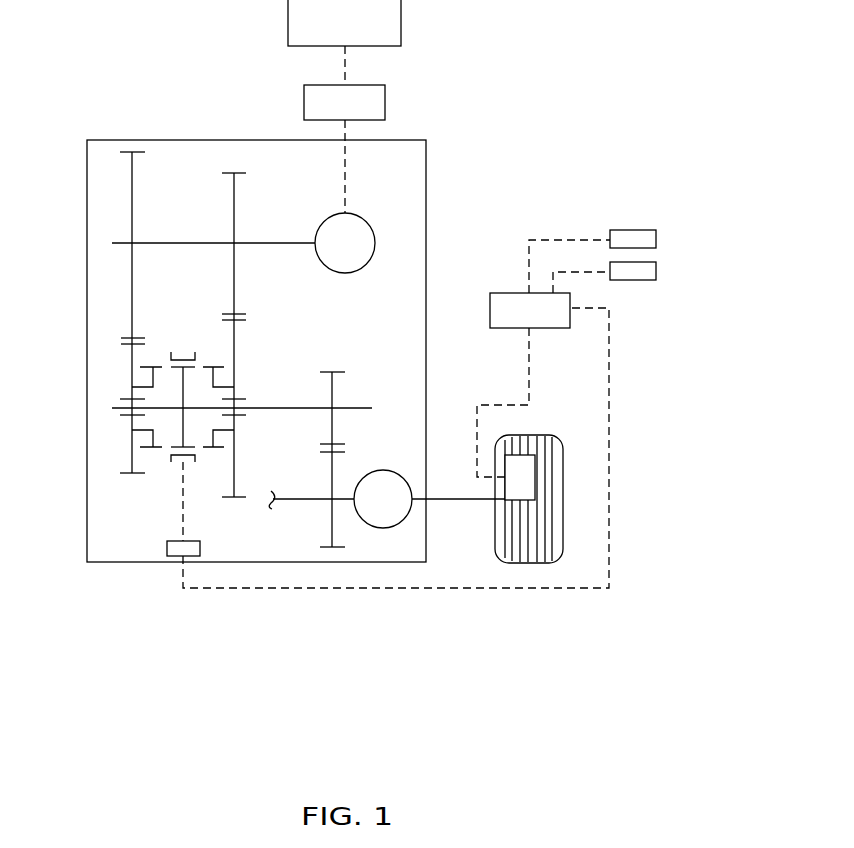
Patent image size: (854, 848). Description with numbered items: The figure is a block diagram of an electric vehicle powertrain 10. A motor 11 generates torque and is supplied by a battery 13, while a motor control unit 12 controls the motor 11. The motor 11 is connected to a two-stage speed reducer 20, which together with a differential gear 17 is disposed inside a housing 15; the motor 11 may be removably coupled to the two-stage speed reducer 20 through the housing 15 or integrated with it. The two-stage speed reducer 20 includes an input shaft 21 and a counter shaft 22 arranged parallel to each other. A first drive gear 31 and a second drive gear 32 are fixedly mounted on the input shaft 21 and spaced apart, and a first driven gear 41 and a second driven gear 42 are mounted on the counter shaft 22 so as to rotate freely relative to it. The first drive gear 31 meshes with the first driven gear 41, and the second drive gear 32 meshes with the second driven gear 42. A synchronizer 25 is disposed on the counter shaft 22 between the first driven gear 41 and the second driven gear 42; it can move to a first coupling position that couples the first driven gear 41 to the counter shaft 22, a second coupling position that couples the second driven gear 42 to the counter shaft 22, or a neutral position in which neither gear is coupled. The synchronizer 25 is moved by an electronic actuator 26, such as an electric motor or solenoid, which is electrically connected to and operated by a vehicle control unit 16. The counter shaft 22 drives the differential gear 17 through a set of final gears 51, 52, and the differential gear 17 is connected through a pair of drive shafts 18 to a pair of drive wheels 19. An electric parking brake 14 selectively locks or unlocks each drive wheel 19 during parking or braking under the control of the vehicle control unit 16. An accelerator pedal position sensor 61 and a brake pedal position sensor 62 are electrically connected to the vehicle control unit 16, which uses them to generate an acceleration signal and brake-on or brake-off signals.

The electric vehicle powertrain 10 is at (69, 22).
The motor 11 is at (375, 243).
The motor control unit 12 is at (385, 101).
The battery 13 is at (401, 22).
The electric parking brake 14 is at (535, 442).
The housing 15 is at (87, 155).
The vehicle control unit 16 is at (570, 297).
The differential gear 17 is at (405, 520).
The drive shaft 18 is at (293, 503).
The drive wheel 19 is at (563, 499).
The two-stage speed reducer 20 is at (116, 310).
The input shaft 21 is at (182, 240).
The counter shaft 22 is at (283, 403).
The synchronizer 25 is at (183, 350).
The electronic actuator 26 is at (167, 548).
The first drive gear 31 is at (235, 200).
The second drive gear 32 is at (132, 228).
The first driven gear 41 is at (234, 465).
The second driven gear 42 is at (132, 452).
The final gear 51 is at (333, 393).
The final gear 52 is at (333, 462).
The accelerator pedal position sensor 61 is at (656, 239).
The brake pedal position sensor 62 is at (656, 271).